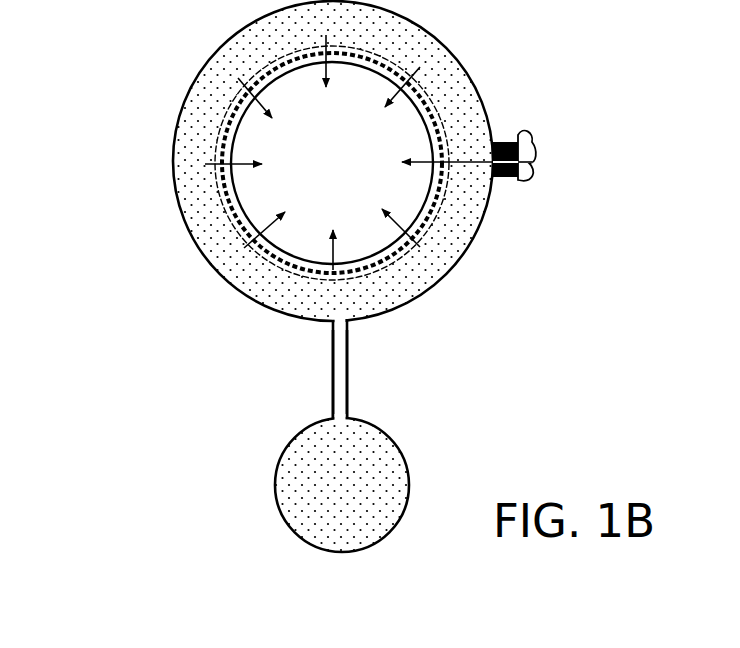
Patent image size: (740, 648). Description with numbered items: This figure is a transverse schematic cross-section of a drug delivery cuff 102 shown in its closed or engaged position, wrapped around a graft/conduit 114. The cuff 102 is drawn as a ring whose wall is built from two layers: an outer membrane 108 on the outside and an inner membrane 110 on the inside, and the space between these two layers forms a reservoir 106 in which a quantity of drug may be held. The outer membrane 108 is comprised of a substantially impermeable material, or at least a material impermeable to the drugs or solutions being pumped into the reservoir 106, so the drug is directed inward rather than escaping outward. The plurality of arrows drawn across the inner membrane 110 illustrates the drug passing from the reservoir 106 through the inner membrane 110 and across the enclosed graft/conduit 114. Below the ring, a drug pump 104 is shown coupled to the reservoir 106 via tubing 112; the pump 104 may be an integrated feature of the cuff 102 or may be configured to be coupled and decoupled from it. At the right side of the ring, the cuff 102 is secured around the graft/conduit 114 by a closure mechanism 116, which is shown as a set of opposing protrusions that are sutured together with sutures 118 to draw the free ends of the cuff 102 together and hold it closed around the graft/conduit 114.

The cuff 102 is at (350, 276).
The drug pump 104 is at (277, 485).
The reservoir 106 is at (340, 294).
The outer membrane 108 is at (462, 60).
The inner membrane 110 is at (243, 282).
The tubing 112 is at (347, 360).
The graft/conduit 114 is at (442, 210).
The closure mechanism 116 is at (541, 181).
The sutures 118 is at (528, 155).